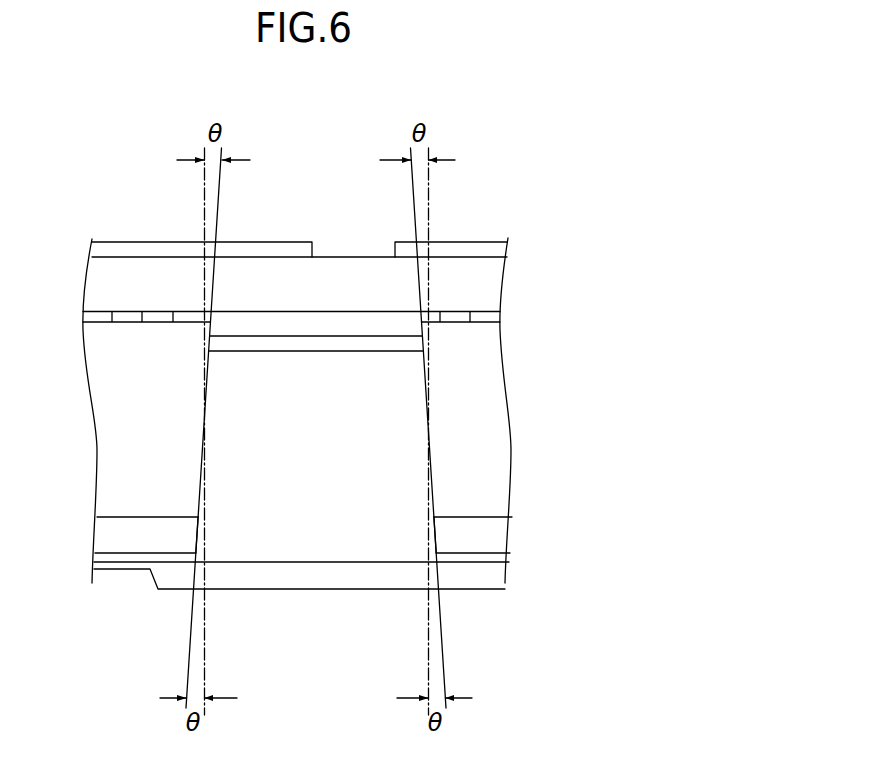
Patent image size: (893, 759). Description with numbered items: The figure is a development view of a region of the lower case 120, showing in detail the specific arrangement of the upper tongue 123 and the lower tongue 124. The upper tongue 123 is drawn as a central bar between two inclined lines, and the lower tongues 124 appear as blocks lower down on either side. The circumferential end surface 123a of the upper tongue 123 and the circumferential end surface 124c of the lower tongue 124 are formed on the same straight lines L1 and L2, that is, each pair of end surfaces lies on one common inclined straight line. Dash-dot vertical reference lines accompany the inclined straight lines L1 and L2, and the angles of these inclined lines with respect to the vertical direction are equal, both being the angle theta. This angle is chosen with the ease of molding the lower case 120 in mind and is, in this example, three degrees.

The lower case 120 is at (475, 214).
The upper tongue 123 is at (328, 352).
The circumferential end surface of the upper tongue 123a is at (211, 327).
The lower tongue 124 is at (137, 523).
The circumferential end surface of the lower tongue 124c is at (200, 535).
The inclined straight line L1 is at (219, 190).
The inclined straight line L2 is at (412, 190).